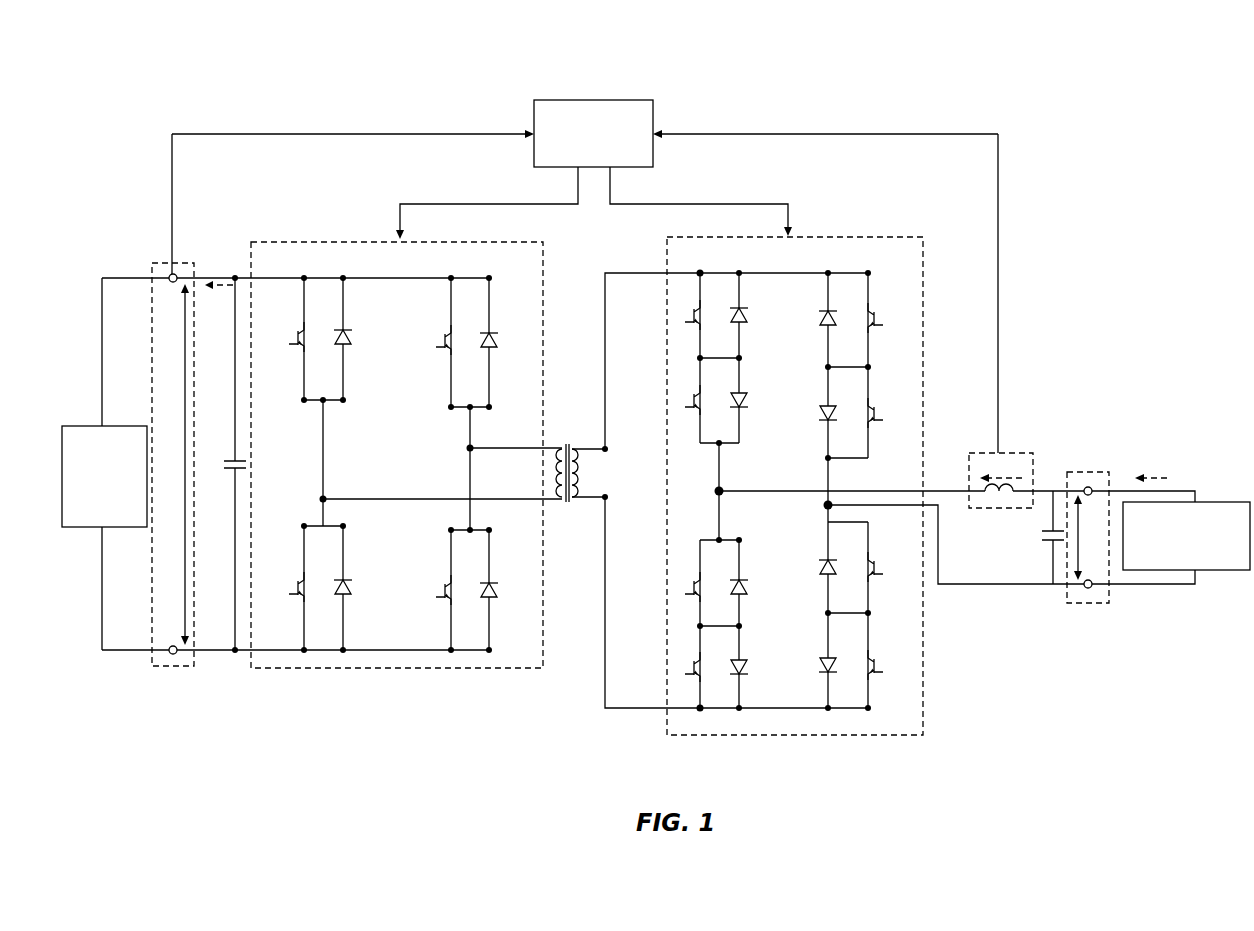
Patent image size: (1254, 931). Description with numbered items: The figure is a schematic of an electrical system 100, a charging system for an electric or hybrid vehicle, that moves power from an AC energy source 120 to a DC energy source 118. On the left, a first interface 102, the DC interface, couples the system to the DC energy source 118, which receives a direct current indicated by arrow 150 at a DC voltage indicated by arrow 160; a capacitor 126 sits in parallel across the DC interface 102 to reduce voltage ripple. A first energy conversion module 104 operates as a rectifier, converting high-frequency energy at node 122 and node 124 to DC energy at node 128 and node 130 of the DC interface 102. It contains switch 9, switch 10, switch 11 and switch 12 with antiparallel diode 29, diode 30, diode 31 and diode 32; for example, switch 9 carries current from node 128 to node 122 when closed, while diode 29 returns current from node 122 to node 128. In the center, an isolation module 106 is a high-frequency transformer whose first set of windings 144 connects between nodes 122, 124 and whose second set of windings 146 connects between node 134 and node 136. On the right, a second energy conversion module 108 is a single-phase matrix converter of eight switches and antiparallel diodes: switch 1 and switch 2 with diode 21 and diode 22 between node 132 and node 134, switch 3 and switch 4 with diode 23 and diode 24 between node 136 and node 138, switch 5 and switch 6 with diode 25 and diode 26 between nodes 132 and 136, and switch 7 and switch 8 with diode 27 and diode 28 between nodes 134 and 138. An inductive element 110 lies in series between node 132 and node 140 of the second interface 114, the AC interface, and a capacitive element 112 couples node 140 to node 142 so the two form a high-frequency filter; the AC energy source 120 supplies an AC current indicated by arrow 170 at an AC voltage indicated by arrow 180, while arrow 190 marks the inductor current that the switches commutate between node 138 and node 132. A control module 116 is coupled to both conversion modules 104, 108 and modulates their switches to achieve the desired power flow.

The electrical system 100 is at (980, 90).
The first interface 102 is at (170, 668).
The first energy conversion module 104 is at (432, 670).
The isolation module 106 is at (569, 510).
The second energy conversion module 108 is at (860, 737).
The inductive element 110 is at (1000, 505).
The capacitive element 112 is at (1040, 537).
The second interface 114 is at (1088, 604).
The control module 116 is at (625, 99).
The DC energy source 118 is at (110, 425).
The AC energy source 120 is at (1228, 500).
The node 122 is at (327, 497).
The node 124 is at (467, 446).
The capacitor 126 is at (248, 465).
The node 128 is at (174, 274).
The node 130 is at (175, 655).
The node 132 is at (723, 489).
The node 134 is at (701, 271).
The node 136 is at (702, 712).
The node 138 is at (825, 507).
The node 140 is at (1090, 486).
The node 142 is at (1092, 587).
The first set of windings 144 is at (555, 488).
The second set of windings 146 is at (580, 488).
The arrow 150 is at (220, 287).
The arrow 160 is at (187, 537).
The arrow 170 is at (1150, 478).
The arrow 180 is at (1076, 563).
The arrow 190 is at (1005, 478).
The switch 1 is at (692, 306).
The switch 2 is at (700, 400).
The switch 3 is at (885, 567).
The switch 4 is at (885, 665).
The switch 5 is at (700, 667).
The switch 6 is at (700, 587).
The switch 7 is at (885, 413).
The switch 8 is at (884, 318).
The switch 9 is at (290, 337).
The switch 10 is at (286, 587).
The switch 11 is at (432, 340).
The switch 12 is at (431, 590).
The diode 21 is at (755, 315).
The diode 22 is at (755, 403).
The diode 23 is at (816, 570).
The diode 24 is at (816, 661).
The diode 25 is at (755, 668).
The diode 26 is at (755, 586).
The diode 27 is at (815, 407).
The diode 28 is at (815, 316).
The diode 29 is at (358, 337).
The diode 30 is at (359, 586).
The diode 31 is at (504, 339).
The diode 32 is at (506, 589).